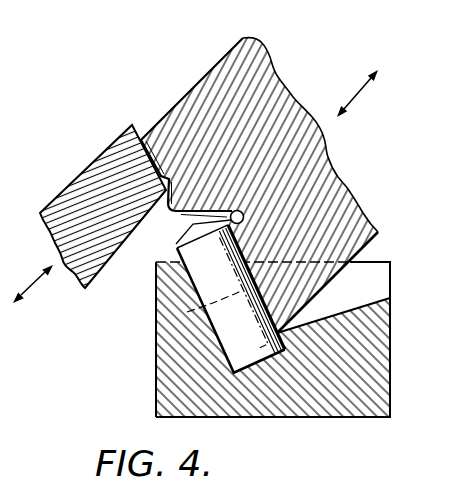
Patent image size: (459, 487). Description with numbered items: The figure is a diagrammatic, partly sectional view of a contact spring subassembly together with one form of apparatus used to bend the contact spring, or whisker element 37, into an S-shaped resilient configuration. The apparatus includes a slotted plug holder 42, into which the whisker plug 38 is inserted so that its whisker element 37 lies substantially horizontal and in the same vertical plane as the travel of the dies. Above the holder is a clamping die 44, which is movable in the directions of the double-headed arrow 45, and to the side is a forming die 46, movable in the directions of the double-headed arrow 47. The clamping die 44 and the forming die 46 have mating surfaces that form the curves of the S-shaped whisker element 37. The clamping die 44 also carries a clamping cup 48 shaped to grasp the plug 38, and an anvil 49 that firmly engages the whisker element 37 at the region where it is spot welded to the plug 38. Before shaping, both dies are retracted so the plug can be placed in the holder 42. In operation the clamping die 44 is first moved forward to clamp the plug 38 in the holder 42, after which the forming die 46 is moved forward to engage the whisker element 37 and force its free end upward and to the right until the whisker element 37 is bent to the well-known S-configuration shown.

The whisker element 37 is at (181, 214).
The whisker plug 38 is at (176, 250).
The slotted plug holder 42 is at (372, 357).
The clamping die 44 is at (286, 106).
The double-headed arrow 45 is at (361, 91).
The forming die 46 is at (88, 177).
The double-headed arrow 47 is at (33, 292).
The clamping cup 48 is at (187, 312).
The anvil 49 is at (242, 212).